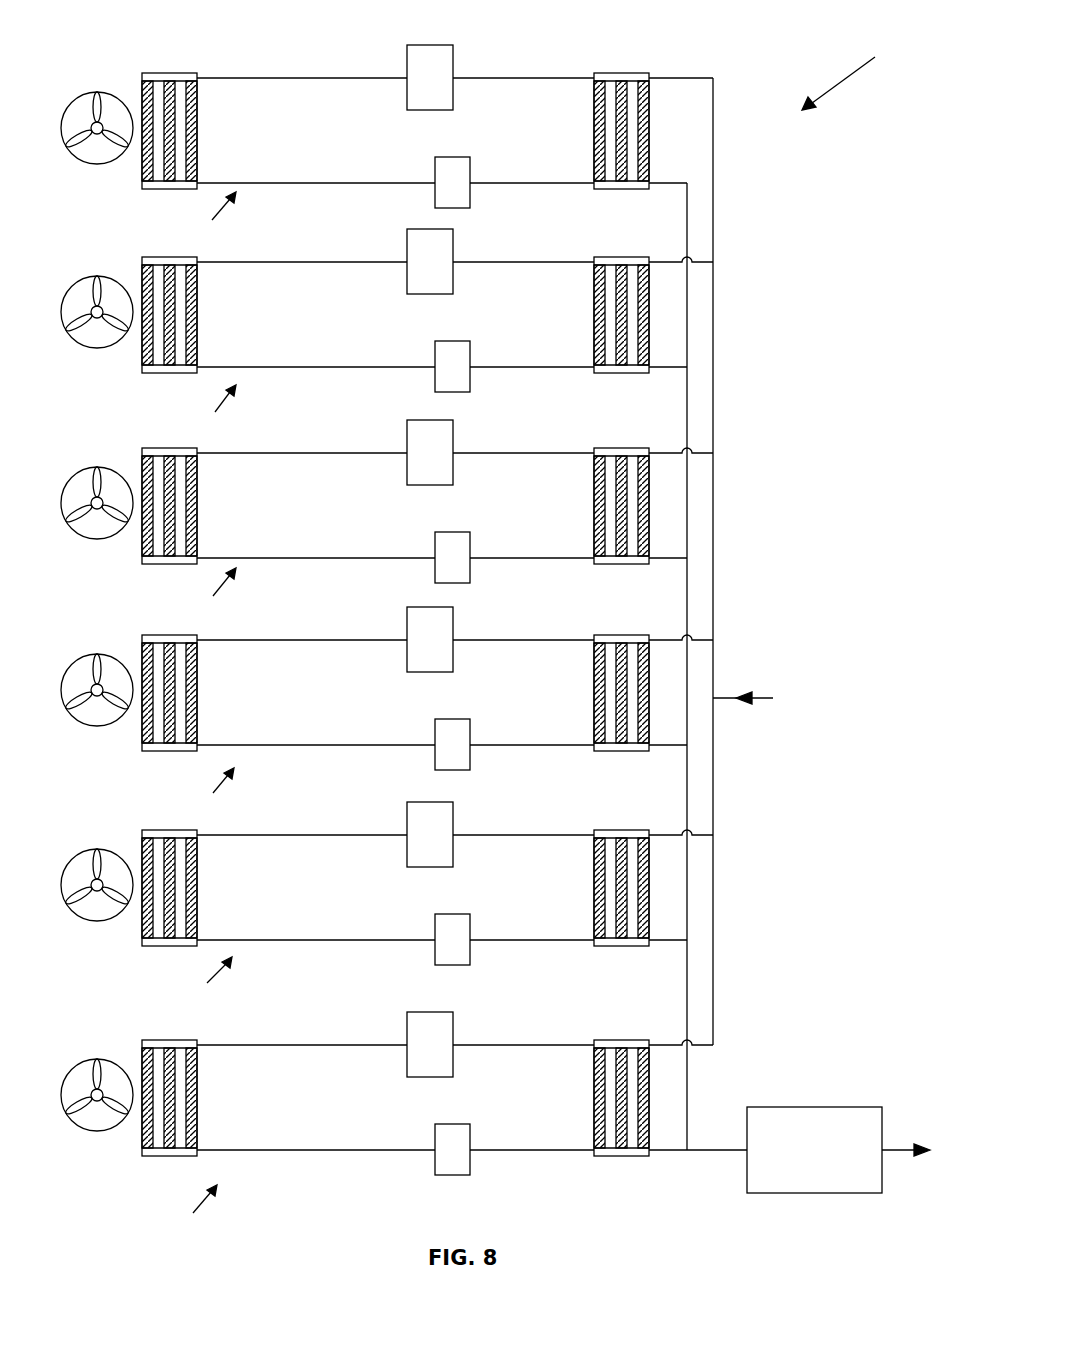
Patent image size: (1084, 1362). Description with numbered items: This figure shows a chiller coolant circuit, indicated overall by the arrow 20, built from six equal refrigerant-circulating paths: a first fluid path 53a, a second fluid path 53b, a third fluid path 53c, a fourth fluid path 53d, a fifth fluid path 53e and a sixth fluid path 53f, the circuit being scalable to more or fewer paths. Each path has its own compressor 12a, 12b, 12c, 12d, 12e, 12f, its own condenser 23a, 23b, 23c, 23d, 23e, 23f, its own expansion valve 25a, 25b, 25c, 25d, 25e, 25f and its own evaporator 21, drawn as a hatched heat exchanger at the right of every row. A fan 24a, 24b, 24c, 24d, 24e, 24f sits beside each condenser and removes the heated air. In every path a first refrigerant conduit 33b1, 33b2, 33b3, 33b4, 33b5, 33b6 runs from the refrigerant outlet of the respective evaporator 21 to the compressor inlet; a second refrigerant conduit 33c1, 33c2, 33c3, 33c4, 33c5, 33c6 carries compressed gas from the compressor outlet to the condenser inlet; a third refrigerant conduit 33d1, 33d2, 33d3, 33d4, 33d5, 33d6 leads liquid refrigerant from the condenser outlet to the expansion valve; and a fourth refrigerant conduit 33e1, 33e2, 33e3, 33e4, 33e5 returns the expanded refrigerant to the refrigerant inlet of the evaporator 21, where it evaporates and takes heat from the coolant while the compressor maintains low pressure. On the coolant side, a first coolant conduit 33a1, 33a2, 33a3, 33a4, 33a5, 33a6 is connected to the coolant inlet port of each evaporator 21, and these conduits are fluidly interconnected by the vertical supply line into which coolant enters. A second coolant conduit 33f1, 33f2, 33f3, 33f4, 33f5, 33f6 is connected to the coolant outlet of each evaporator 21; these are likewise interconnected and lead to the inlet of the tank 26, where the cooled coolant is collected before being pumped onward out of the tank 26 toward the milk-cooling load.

The cooling system 20 is at (857, 69).
The evaporator 21 is at (640, 74).
The tank 26 is at (805, 1107).
The fan 24a is at (86, 95).
The fan 24b is at (86, 280).
The fan 24c is at (86, 472).
The fan 24d is at (86, 657).
The fan 24e is at (86, 852).
The fan 24f is at (86, 1065).
The first condenser 23a is at (150, 76).
The second condenser 23b is at (150, 260).
The third condenser 23c is at (150, 451).
The fourth condenser 23d is at (150, 638).
The fifth condenser 23e is at (150, 833).
The sixth condenser 23f is at (150, 1043).
The first compressor 12a is at (410, 94).
The second compressor 12b is at (410, 278).
The third compressor 12c is at (410, 470).
The fourth compressor 12d is at (410, 657).
The fifth compressor 12e is at (410, 852).
The sixth compressor 12f is at (410, 1064).
The first expansion valve 25a is at (458, 162).
The second expansion valve 25b is at (458, 346).
The third expansion valve 25c is at (458, 537).
The fourth expansion valve 25d is at (458, 724).
The fifth expansion valve 25e is at (458, 918).
The sixth expansion valve 25f is at (458, 1128).
The first coolant conduit 33a1 is at (708, 78).
The first coolant conduit 33a2 is at (675, 261).
The first coolant conduit 33a3 is at (672, 453).
The first coolant conduit 33a4 is at (672, 640).
The first coolant conduit 33a5 is at (672, 835).
The first coolant conduit 33a6 is at (672, 1044).
The first refrigerant conduit 33b1 is at (525, 78).
The first refrigerant conduit 33b2 is at (505, 262).
The first refrigerant conduit 33b3 is at (530, 453).
The first refrigerant conduit 33b4 is at (513, 640).
The first refrigerant conduit 33b5 is at (511, 835).
The first refrigerant conduit 33b6 is at (530, 1045).
The second refrigerant conduit 33c1 is at (292, 78).
The second refrigerant conduit 33c2 is at (280, 262).
The second refrigerant conduit 33c3 is at (270, 453).
The second refrigerant conduit 33c4 is at (270, 640).
The second refrigerant conduit 33c5 is at (270, 835).
The second refrigerant conduit 33c6 is at (262, 1045).
The third refrigerant conduit 33d1 is at (242, 183).
The third refrigerant conduit 33d2 is at (240, 367).
The third refrigerant conduit 33d3 is at (238, 558).
The third refrigerant conduit 33d4 is at (238, 745).
The third refrigerant conduit 33d5 is at (238, 940).
The third refrigerant conduit 33d6 is at (518, 1150).
The fourth refrigerant conduit 33e1 is at (525, 183).
The fourth refrigerant conduit 33e2 is at (515, 367).
The fourth refrigerant conduit 33e3 is at (513, 558).
The fourth refrigerant conduit 33e4 is at (513, 745).
The fourth refrigerant conduit 33e5 is at (525, 940).
The second coolant conduit 33f1 is at (667, 183).
The second coolant conduit 33f2 is at (662, 367).
The second coolant conduit 33f3 is at (662, 558).
The second coolant conduit 33f4 is at (660, 745).
The second coolant conduit 33f5 is at (662, 940).
The second coolant conduit 33f6 is at (670, 1150).
The first fluid path 53a is at (207, 223).
The second fluid path 53b is at (208, 413).
The third fluid path 53c is at (208, 601).
The fourth fluid path 53d is at (207, 796).
The fifth fluid path 53e is at (203, 986).
The sixth fluid path 53f is at (190, 1215).